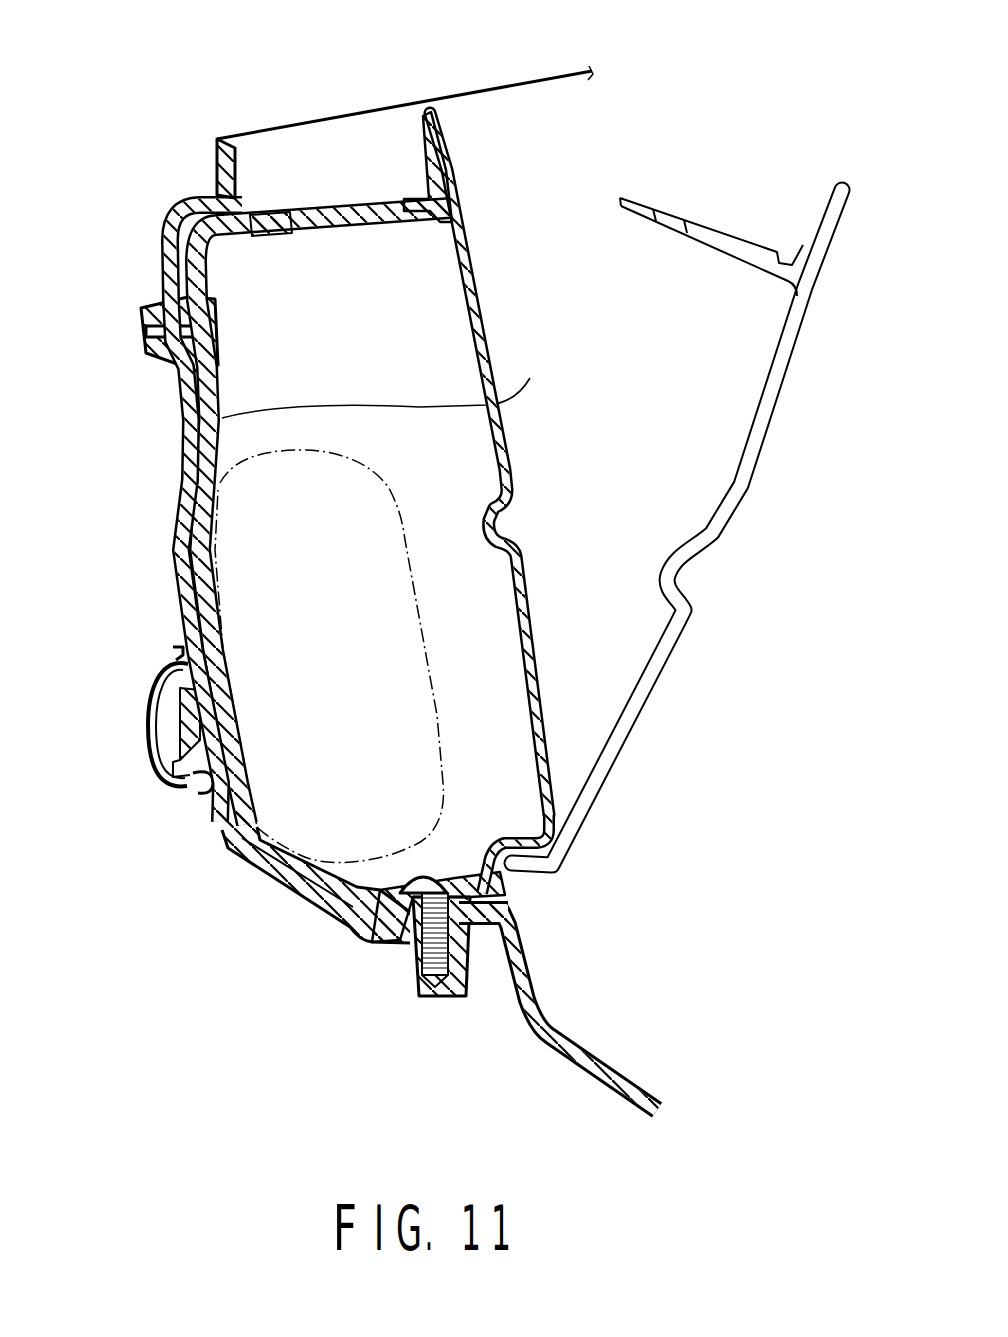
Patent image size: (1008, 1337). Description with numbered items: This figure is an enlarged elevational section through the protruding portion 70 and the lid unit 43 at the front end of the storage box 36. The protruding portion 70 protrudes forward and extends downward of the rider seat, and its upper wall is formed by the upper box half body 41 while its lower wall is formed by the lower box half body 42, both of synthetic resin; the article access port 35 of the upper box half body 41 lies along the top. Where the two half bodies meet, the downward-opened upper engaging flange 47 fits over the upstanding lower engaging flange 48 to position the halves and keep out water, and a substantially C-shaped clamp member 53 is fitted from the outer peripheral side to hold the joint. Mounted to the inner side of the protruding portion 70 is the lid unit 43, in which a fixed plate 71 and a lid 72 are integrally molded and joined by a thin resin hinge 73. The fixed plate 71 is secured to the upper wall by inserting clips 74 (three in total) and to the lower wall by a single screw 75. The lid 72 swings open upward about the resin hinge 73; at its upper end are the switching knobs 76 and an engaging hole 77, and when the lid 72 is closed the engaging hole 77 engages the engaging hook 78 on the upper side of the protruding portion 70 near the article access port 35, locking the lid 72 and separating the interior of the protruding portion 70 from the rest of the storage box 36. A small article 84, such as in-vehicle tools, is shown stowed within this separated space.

The article access port 35 is at (333, 112).
The storage box 36 is at (497, 82).
The upper box half body 41 is at (309, 468).
The lower box half body 42 is at (517, 1013).
The lid unit 43 is at (630, 341).
The upper engaging flange 47 is at (171, 702).
The lower engaging flange 48 is at (190, 717).
The clamp member 53 is at (161, 770).
The protruding portion 70 is at (178, 579).
The fixed plate 71 is at (386, 382).
The lid 72 is at (732, 465).
The resin hinge 73 is at (512, 880).
The inserting clip 74 is at (213, 327).
The screw 75 is at (430, 880).
The switching knob 76 is at (448, 152).
The engaging hole 77 is at (306, 236).
The engaging hook 78 is at (295, 207).
The small article 84 is at (433, 680).